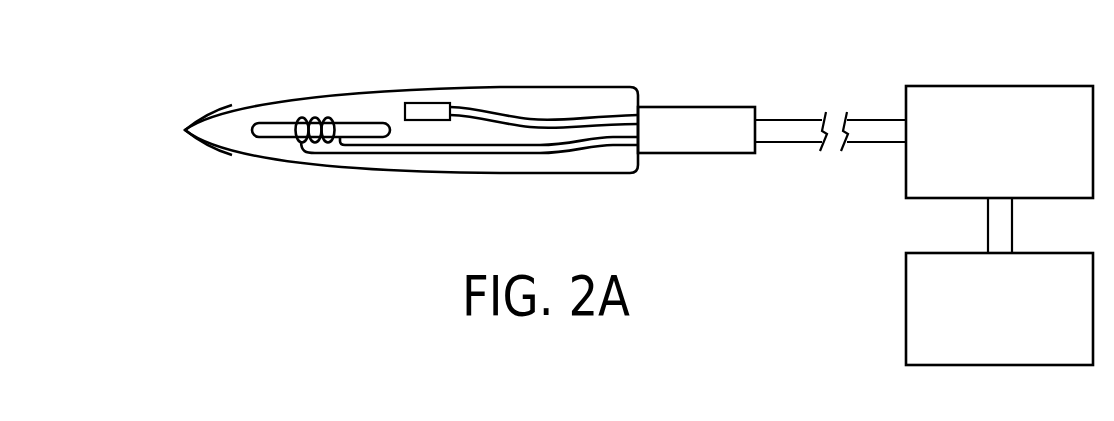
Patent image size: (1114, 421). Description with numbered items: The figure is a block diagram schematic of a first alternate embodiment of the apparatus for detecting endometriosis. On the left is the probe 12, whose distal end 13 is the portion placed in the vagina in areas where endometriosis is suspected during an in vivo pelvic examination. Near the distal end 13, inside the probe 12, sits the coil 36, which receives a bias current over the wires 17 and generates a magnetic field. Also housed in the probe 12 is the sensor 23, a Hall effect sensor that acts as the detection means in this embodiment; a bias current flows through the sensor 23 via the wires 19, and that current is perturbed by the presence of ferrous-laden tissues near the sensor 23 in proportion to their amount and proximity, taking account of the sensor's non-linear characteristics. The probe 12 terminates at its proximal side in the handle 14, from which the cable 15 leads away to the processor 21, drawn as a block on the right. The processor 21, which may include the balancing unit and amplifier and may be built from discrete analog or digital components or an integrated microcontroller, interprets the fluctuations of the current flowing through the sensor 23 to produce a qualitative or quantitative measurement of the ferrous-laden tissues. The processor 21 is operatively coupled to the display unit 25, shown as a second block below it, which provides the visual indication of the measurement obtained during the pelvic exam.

The probe 12 is at (504, 87).
The distal end 13 is at (183, 130).
The handle 14 is at (705, 106).
The cable 15 is at (795, 132).
The wires 17 is at (577, 151).
The wires 19 is at (589, 115).
The processor 21 is at (1018, 157).
The sensor 23 is at (424, 106).
The display unit 25 is at (1018, 323).
The coil 36 is at (319, 117).